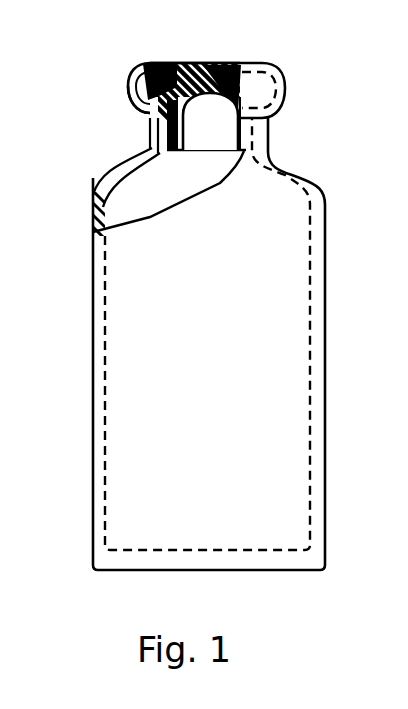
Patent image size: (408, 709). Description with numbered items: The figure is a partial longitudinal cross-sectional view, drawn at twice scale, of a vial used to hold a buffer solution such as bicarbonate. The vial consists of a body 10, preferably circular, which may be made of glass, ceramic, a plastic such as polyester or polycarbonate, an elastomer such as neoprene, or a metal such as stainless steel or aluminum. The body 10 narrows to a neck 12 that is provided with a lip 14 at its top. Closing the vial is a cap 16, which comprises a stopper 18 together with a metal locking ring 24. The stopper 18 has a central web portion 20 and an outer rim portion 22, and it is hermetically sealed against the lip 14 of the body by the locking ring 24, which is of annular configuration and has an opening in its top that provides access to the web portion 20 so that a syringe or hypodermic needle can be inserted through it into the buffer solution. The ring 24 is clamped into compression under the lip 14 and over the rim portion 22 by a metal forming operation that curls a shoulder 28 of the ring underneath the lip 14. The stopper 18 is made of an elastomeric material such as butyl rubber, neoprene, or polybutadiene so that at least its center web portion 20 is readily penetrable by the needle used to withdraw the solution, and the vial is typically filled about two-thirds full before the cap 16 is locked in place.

The body 10 is at (91, 385).
The neck 12 is at (152, 146).
The lip 14 is at (128, 90).
The cap 16 is at (300, 42).
The stopper 18 is at (200, 153).
The web portion 20 is at (233, 63).
The rim portion 22 is at (158, 64).
The metal locking ring 24 is at (285, 80).
The shoulder 28 is at (138, 118).